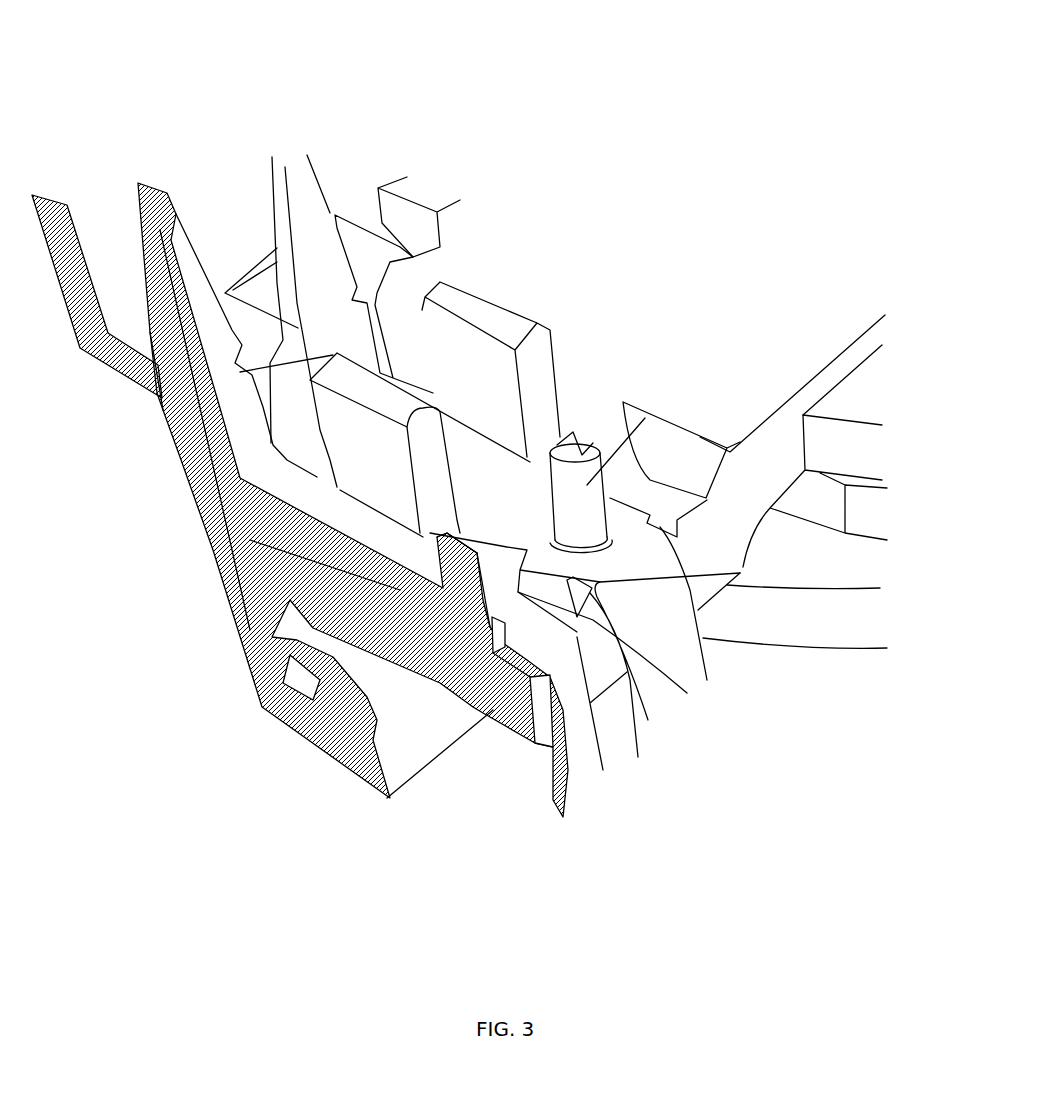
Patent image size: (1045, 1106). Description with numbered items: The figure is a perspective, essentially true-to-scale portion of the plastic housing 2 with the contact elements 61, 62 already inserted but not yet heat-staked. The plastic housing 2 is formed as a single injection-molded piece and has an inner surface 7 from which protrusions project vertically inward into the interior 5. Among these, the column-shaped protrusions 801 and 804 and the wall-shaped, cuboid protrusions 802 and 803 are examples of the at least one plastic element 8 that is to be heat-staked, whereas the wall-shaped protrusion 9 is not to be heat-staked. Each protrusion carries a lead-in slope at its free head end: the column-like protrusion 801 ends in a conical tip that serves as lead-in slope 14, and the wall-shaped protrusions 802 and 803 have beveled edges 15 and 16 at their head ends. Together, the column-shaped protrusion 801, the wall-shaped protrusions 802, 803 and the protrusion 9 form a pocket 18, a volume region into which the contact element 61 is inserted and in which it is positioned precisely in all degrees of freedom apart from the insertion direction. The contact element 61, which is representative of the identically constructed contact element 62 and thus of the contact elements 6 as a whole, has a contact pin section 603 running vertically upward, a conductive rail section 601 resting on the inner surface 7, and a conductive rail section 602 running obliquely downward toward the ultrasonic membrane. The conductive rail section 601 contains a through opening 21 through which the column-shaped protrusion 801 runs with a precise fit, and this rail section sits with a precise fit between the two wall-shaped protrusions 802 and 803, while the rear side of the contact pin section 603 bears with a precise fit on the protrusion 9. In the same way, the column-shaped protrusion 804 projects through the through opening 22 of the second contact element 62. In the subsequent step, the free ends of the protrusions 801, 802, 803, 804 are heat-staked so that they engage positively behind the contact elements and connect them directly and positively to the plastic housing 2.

The plastic housing 2 is at (193, 463).
The interior 5 is at (135, 300).
The contact elements 6 is at (257, 60).
The contact element 61 is at (307, 190).
The contact element 62 is at (180, 270).
The inner surface 7 is at (740, 573).
The plastic element to be heat-staked 8 is at (823, 210).
The column-shaped protrusion 801 is at (607, 533).
The wall-shaped protrusion 802 is at (463, 533).
The wall-shaped protrusion 803 is at (430, 442).
The column-shaped protrusion 804 is at (500, 457).
The protrusion not to be heat-staked 9 is at (257, 267).
The lead-in slope 14 is at (582, 455).
The beveled edge 15 is at (463, 322).
The beveled edge 16 is at (357, 418).
The pocket 18 is at (488, 466).
The through opening 21 is at (707, 437).
The through opening 22 is at (497, 657).
The conductive rail section 601 is at (640, 653).
The conductive rail section 602 is at (685, 653).
The contact pin section 603 is at (313, 227).